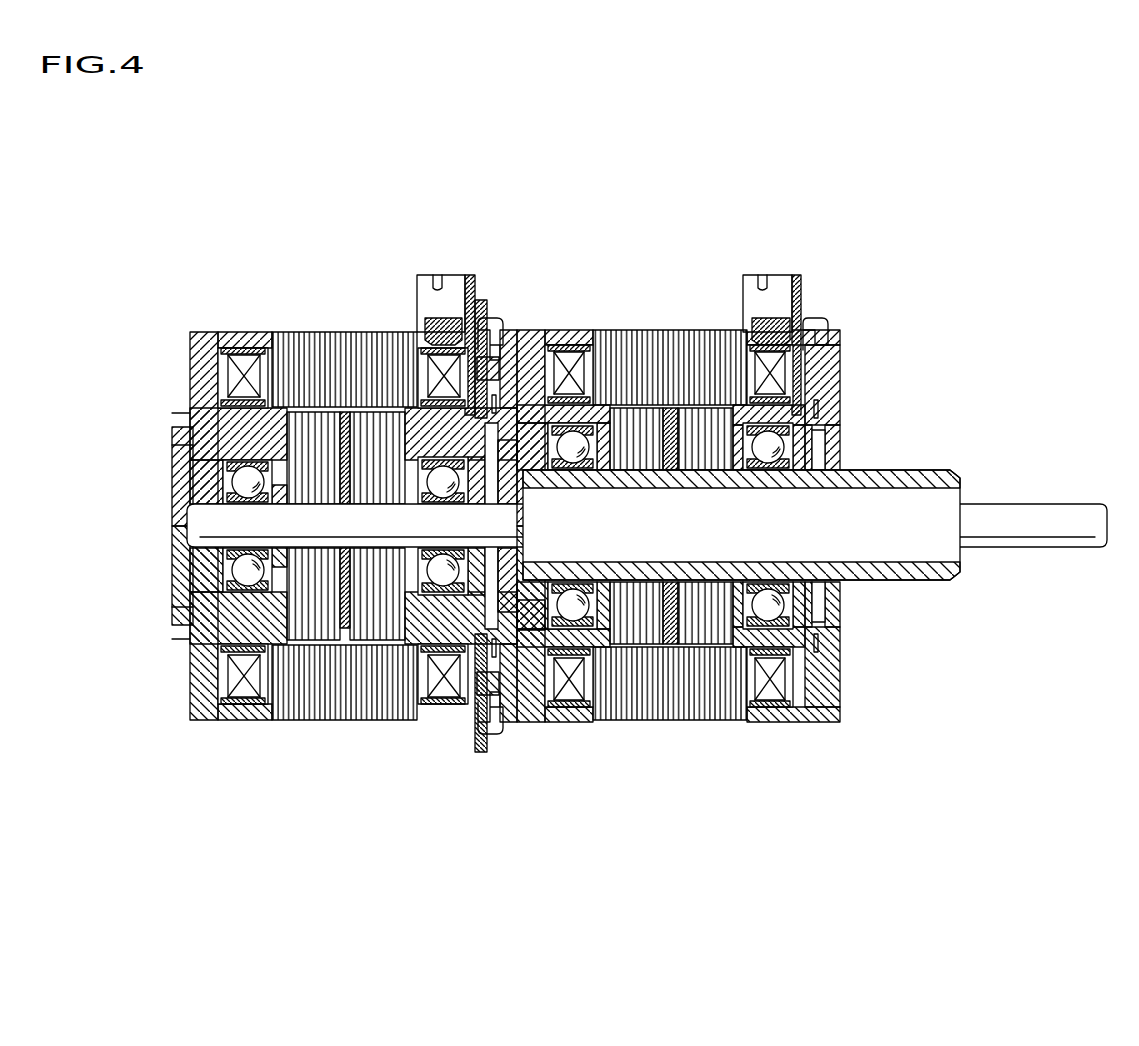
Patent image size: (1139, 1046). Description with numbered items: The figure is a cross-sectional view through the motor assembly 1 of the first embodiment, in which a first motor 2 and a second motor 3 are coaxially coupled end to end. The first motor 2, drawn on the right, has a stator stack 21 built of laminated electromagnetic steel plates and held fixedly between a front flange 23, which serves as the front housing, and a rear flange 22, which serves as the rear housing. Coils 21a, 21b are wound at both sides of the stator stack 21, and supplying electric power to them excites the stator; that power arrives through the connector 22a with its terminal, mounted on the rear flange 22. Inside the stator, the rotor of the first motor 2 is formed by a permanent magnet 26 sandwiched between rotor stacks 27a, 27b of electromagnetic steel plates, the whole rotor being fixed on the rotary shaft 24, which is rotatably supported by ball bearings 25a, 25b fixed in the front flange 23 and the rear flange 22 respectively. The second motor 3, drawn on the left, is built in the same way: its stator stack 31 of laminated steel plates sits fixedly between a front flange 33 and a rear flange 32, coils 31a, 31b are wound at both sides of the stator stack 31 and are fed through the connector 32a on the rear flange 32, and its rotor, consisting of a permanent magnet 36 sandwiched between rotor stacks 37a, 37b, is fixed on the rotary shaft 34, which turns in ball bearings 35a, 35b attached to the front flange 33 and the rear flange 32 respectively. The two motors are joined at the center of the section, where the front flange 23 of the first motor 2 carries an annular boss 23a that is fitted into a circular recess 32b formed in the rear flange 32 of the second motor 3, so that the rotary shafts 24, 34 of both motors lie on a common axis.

The motor assembly 1 is at (706, 208).
The first motor 2 is at (655, 310).
The second motor 3 is at (323, 316).
The stator stack 21 is at (676, 704).
The coil 21a is at (572, 358).
The coil 21b is at (770, 692).
The rear flange 22 is at (812, 722).
The connector 22a is at (798, 276).
The front flange 23 is at (552, 714).
The annular boss 23a is at (519, 618).
The rotary shaft 24 is at (920, 478).
The ball bearing 25a is at (562, 436).
The ball bearing 25b is at (786, 440).
The permanent magnet 26 is at (672, 428).
The rotor stack 27a is at (642, 430).
The rotor stack 27b is at (708, 428).
The stator stack 31 is at (324, 706).
The coil 31a is at (248, 358).
The coil 31b is at (443, 700).
The rear flange 32 is at (481, 719).
The connector 32a is at (466, 276).
The circular recess 32b is at (507, 615).
The front flange 33 is at (205, 722).
The rotary shaft 34 is at (1030, 510).
The ball bearing 35a is at (244, 470).
The ball bearing 35b is at (440, 466).
The permanent magnet 36 is at (345, 424).
The rotor stack 37a is at (315, 428).
The rotor stack 37b is at (374, 428).